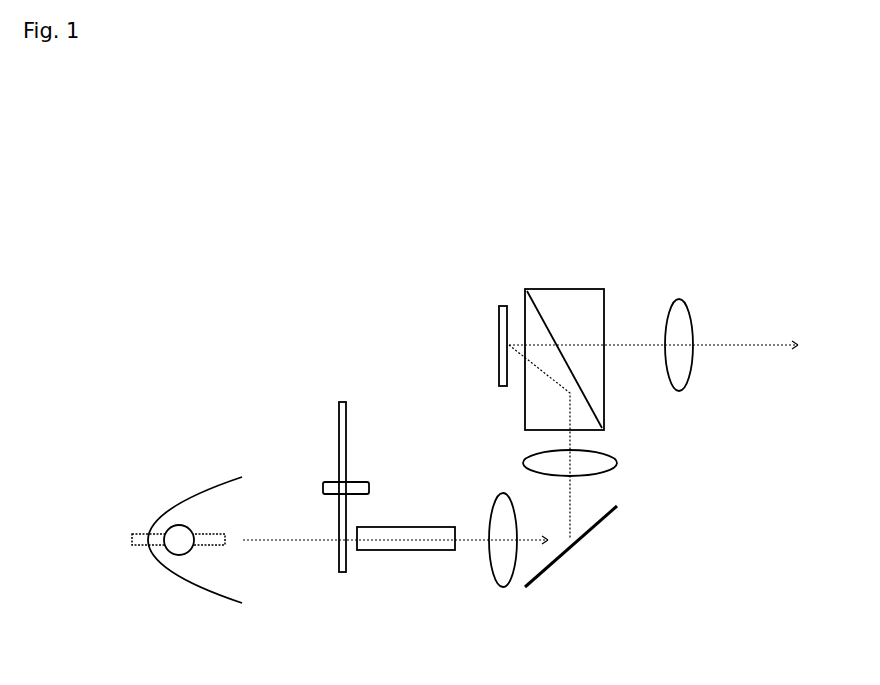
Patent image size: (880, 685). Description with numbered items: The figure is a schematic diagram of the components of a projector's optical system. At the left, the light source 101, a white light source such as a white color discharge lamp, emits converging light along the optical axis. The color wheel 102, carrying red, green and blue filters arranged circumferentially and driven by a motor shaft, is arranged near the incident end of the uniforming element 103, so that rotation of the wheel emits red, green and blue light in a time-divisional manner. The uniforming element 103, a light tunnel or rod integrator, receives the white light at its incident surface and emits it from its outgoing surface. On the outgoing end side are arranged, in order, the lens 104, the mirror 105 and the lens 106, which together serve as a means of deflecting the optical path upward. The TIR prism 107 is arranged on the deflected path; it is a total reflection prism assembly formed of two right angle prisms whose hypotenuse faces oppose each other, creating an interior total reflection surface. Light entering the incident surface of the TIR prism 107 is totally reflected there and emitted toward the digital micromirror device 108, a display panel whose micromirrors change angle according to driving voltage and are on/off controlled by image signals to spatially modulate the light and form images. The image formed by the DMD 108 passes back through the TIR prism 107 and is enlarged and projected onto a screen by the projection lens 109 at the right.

The light source 101 is at (198, 596).
The color wheel 102 is at (344, 400).
The uniforming element 103 is at (442, 548).
The lens 104 is at (505, 585).
The mirror 105 is at (597, 525).
The lens 106 is at (617, 462).
The TIR prism 107 is at (572, 295).
The digital micromirror device 108 is at (503, 300).
The projection lens 109 is at (680, 303).